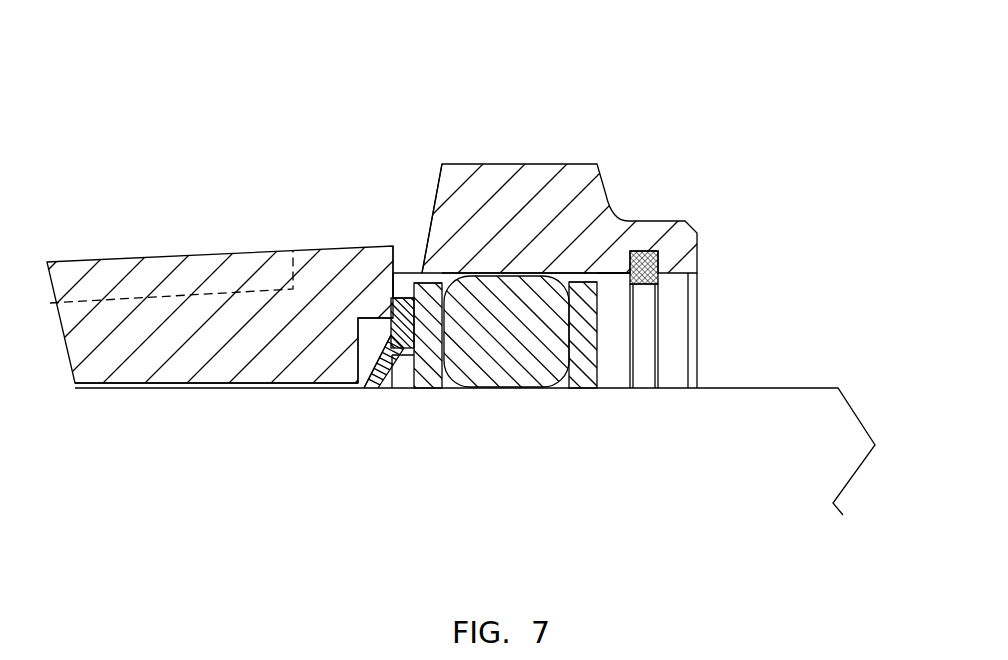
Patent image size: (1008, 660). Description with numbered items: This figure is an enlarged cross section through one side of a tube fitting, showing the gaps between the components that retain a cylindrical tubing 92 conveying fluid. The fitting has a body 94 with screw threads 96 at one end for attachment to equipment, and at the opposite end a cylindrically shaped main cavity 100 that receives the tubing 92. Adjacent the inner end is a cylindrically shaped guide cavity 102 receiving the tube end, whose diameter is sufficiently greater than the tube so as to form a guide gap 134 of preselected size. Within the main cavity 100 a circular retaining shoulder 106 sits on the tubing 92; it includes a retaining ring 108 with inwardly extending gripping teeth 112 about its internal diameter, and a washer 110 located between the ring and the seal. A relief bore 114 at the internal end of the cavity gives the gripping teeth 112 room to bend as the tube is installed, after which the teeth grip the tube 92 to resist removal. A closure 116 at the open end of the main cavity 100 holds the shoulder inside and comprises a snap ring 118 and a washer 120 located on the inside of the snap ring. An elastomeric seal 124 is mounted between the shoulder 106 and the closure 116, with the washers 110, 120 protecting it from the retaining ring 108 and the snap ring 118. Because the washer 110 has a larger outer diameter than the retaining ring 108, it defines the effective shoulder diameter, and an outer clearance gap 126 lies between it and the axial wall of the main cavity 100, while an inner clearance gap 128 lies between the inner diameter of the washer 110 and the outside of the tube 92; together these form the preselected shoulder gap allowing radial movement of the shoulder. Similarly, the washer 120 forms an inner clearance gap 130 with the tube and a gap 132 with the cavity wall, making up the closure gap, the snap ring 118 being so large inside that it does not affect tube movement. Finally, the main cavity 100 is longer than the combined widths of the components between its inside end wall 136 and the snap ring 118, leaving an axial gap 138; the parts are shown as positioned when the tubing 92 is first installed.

The tubing 92 is at (772, 388).
The body 94 is at (468, 164).
The screw threads 96 is at (178, 253).
The main cavity 100 is at (623, 348).
The guide cavity 102 is at (247, 383).
The retaining shoulder 106 is at (422, 273).
The retaining ring 108 is at (390, 388).
The washer 110 is at (462, 273).
The gripping teeth 112 is at (370, 388).
The relief bore 114 is at (340, 388).
The closure 116 is at (645, 251).
The snap ring 118 is at (647, 373).
The washer 120 is at (557, 273).
The elastomeric seal 124 is at (521, 372).
The outer clearance gap 126 is at (432, 310).
The inner clearance gap 128 is at (435, 352).
The inner clearance gap 130 is at (583, 352).
The gap 132 is at (597, 335).
The guide gap 134 is at (158, 353).
The inside end wall 136 is at (396, 272).
The axial gap 138 is at (638, 336).